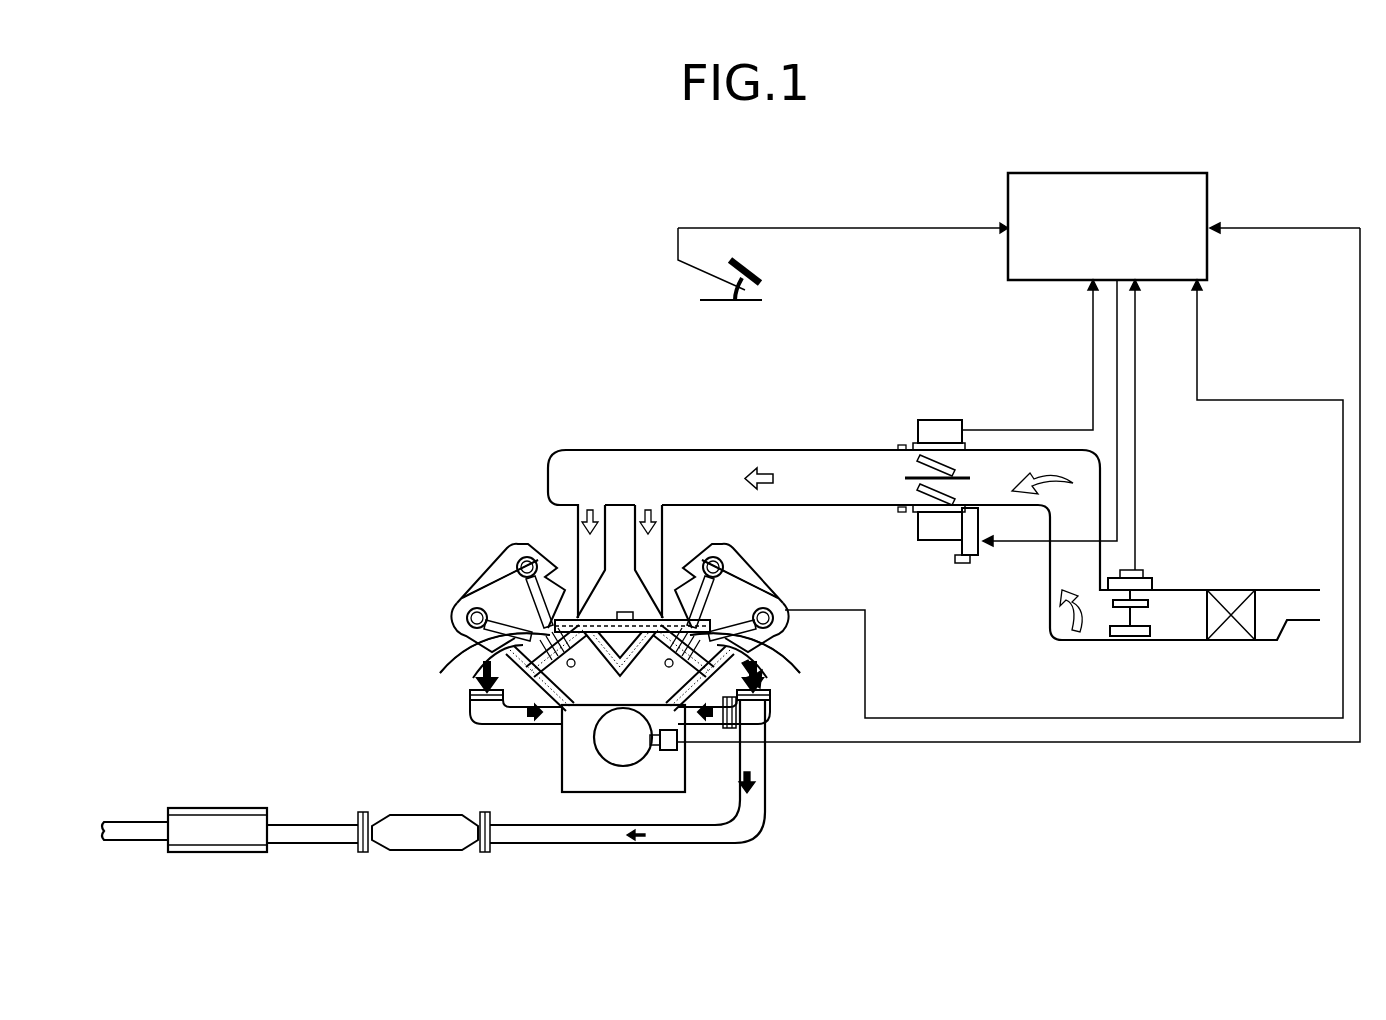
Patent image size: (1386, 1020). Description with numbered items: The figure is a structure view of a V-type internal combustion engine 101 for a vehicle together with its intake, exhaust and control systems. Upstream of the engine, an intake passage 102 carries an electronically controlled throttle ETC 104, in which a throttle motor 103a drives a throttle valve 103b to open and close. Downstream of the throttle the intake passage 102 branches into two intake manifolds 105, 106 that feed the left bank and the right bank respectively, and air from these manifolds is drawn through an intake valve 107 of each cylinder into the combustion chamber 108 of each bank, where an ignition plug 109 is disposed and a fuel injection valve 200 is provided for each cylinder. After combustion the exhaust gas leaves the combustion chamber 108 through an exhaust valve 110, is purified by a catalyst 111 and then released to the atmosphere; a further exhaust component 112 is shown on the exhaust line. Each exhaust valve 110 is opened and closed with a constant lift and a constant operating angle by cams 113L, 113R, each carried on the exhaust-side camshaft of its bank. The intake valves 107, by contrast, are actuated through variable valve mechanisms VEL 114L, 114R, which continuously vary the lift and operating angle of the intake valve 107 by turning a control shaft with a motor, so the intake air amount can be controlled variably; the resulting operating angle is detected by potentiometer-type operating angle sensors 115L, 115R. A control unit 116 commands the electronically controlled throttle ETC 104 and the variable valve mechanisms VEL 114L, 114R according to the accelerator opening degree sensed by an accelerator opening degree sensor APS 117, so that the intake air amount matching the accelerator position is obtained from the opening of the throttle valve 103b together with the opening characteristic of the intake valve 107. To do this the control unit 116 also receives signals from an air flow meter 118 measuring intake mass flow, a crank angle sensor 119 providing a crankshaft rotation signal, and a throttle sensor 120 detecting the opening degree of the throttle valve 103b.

The V-type internal combustion engine 101 is at (555, 777).
The intake passage 102 is at (805, 460).
The throttle motor 103a is at (980, 550).
The throttle valve 103b is at (950, 495).
The electronically controlled throttle ETC 104 is at (912, 540).
The intake manifold 105 is at (578, 522).
The intake manifold 106 is at (655, 537).
The intake valve 107 is at (492, 650).
The combustion chamber 108 is at (542, 660).
The ignition plug 109 is at (470, 590).
The exhaust valve 110 is at (493, 645).
The catalyst 111 is at (428, 812).
The muffler 112 is at (228, 808).
The cam 113L is at (470, 627).
The cam 113R is at (773, 627).
The variable valve mechanism VEL 114L is at (573, 522).
The variable valve mechanism VEL 114R is at (733, 563).
The operating angle sensor 115L is at (520, 565).
The operating angle sensor 115R is at (713, 560).
The control unit 116 is at (1210, 208).
The accelerator opening degree sensor APS 117 is at (765, 270).
The air flow meter 118 is at (1152, 584).
The crank angle sensor 119 is at (677, 752).
The throttle sensor 120 is at (935, 522).
The fuel injection valve 200 is at (622, 565).